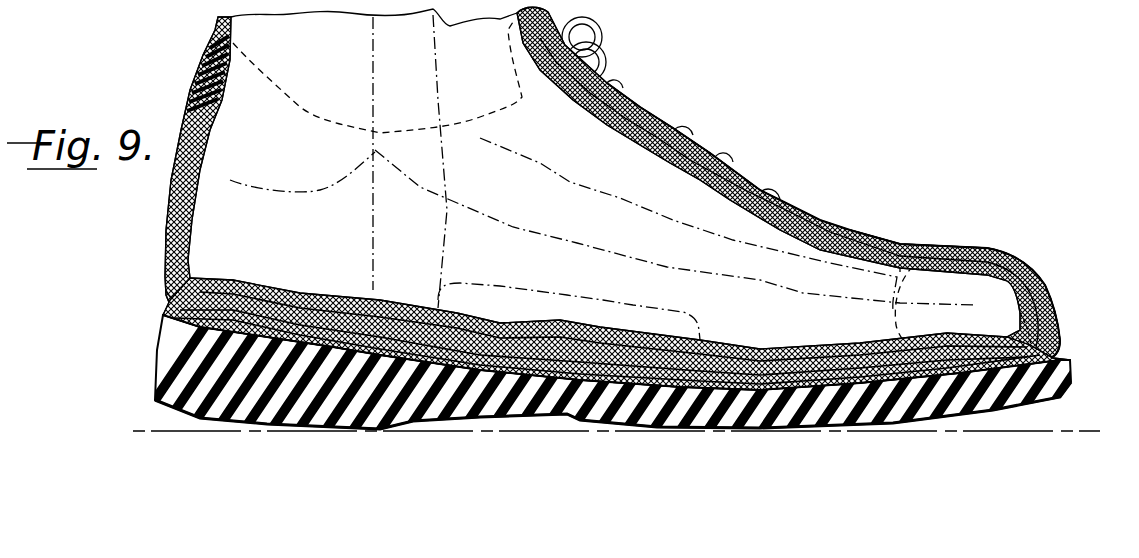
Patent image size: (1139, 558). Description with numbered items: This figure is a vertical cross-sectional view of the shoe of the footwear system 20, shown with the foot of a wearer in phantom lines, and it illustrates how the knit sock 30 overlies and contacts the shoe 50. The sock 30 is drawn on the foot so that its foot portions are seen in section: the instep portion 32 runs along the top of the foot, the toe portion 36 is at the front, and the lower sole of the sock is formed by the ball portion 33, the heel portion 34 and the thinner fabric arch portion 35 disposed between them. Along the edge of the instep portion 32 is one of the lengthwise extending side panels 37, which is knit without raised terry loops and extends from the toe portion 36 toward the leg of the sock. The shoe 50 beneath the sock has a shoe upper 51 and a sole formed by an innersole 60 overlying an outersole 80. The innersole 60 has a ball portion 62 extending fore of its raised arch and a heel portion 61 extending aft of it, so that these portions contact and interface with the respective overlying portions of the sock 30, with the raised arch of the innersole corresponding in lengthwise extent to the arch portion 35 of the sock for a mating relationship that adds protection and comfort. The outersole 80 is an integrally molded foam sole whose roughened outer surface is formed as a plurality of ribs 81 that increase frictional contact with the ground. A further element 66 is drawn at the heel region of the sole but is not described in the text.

The footwear system 20 is at (866, 146).
The knit sock 30 is at (850, 228).
The instep portion 32 is at (700, 153).
The ball portion 33 is at (785, 350).
The heel portion 34 is at (190, 240).
The arch portion 35 is at (597, 260).
The toe portion 36 is at (1013, 315).
The side panel 37 is at (500, 170).
The shoe 50 is at (1031, 254).
The shoe upper 51 is at (897, 242).
The innersole 60 is at (378, 300).
The heel portion 61 is at (318, 295).
The ball portion 62 is at (870, 352).
The heel wedge 66 is at (200, 282).
The outersole 80 is at (207, 0).
The ribs 81 is at (866, 0).